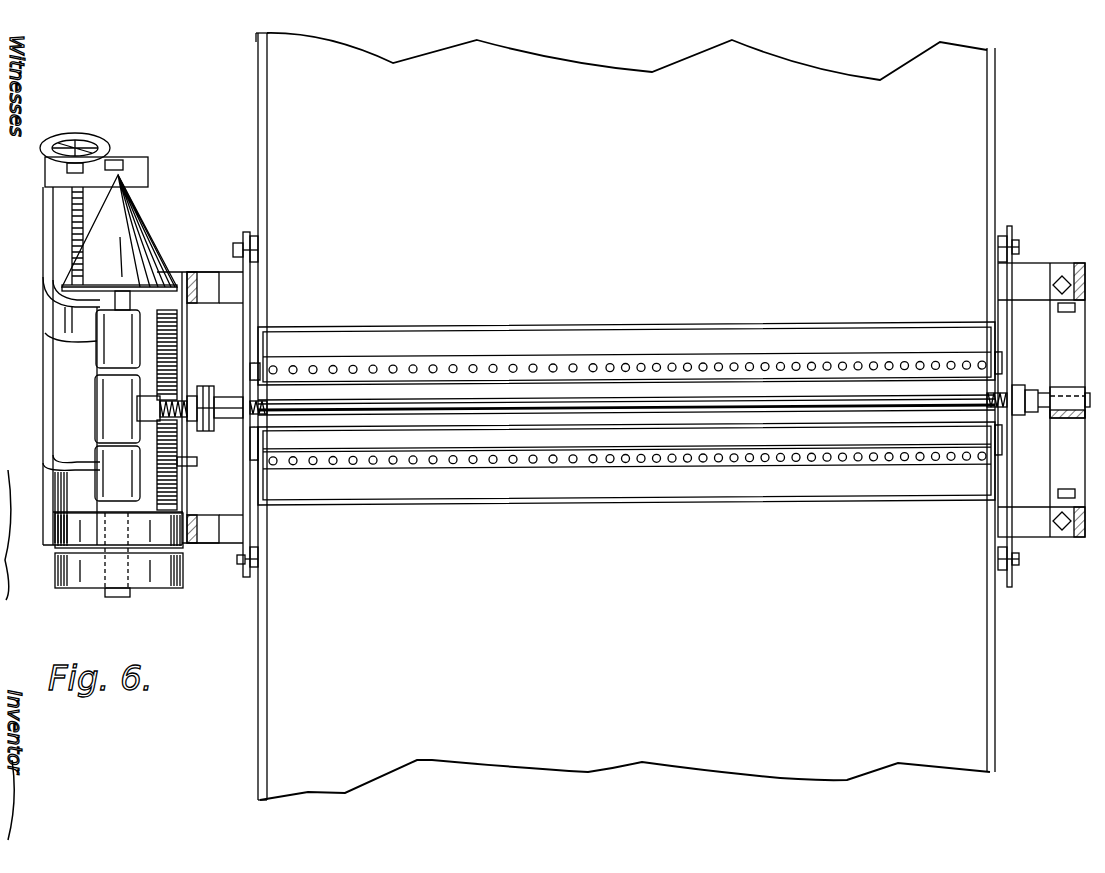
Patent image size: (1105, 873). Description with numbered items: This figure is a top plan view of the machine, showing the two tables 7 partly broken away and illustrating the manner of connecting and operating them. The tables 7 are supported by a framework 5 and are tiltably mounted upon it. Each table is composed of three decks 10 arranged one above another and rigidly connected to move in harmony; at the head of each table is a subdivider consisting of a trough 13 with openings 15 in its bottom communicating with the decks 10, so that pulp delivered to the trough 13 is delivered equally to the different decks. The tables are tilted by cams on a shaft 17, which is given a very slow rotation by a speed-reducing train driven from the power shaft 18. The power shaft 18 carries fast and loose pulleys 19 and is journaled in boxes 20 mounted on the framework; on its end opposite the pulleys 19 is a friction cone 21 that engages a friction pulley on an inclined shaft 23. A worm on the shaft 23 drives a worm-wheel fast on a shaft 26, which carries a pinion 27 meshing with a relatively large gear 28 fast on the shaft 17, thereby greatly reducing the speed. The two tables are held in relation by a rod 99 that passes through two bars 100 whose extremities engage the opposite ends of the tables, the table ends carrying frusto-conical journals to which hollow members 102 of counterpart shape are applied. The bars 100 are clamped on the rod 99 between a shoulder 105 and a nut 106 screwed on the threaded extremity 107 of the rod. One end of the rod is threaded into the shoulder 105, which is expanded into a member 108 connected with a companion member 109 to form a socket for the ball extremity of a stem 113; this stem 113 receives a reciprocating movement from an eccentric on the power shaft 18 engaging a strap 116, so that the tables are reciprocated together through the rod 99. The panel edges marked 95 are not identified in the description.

The framework 5 is at (1037, 262).
The table 7 is at (625, 409).
The deck 10 is at (625, 416).
The trough 13 is at (378, 330).
The opening 15 is at (471, 366).
The shaft 17 is at (1040, 392).
The power shaft 18 is at (118, 592).
The fast and loose pulleys 19 is at (182, 548).
The box 20 is at (95, 350).
The friction cone 21 is at (150, 232).
The shaft 23 is at (70, 218).
The shaft 26 is at (190, 462).
The pinion 27 is at (175, 488).
The gear 28 is at (172, 353).
The panel edge 95 is at (256, 104).
The rod 99 is at (830, 405).
The bar 100 is at (250, 320).
The hollow member 102 is at (254, 243).
The shoulder 105 is at (238, 397).
The nut 106 is at (1020, 417).
The threaded extremity 107 is at (1025, 393).
The member 108 is at (211, 431).
The companion member 109 is at (203, 387).
The stem 113 is at (100, 466).
The strap 116 is at (105, 398).